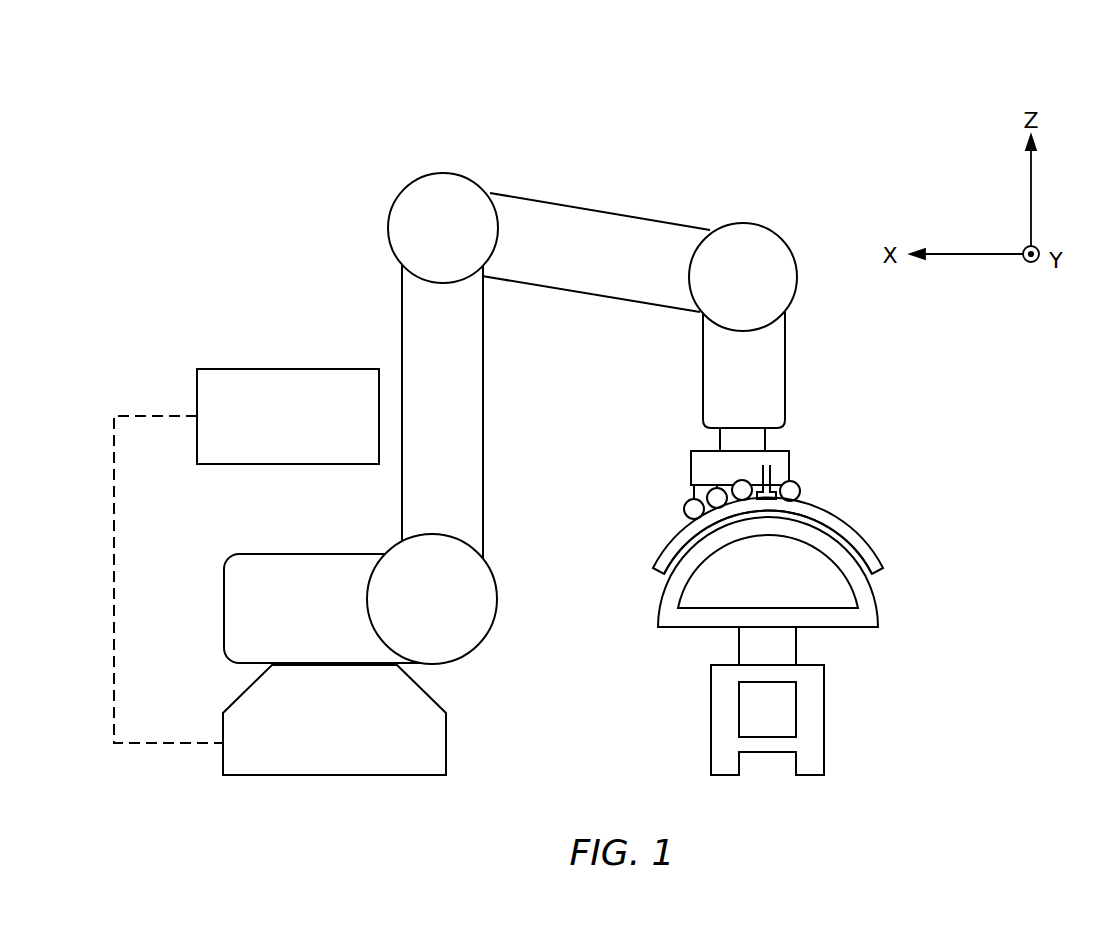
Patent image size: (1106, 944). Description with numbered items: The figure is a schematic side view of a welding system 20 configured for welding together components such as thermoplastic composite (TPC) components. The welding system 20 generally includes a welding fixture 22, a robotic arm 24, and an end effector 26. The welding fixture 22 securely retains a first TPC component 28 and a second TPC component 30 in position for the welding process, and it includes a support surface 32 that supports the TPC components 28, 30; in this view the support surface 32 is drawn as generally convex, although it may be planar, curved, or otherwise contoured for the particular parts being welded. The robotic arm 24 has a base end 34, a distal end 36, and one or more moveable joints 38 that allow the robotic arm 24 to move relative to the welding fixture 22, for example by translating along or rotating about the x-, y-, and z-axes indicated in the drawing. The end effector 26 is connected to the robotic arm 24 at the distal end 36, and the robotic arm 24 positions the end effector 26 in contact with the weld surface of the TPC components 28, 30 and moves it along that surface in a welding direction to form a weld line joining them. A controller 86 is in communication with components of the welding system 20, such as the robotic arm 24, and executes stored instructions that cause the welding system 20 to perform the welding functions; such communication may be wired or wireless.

The welding system 20 is at (497, 402).
The welding fixture 22 is at (851, 628).
The robotic arm 24 is at (566, 178).
The end effector 26 is at (789, 465).
The first TPC component 28 is at (877, 545).
The second TPC component 30 is at (878, 580).
The support surface 32 is at (838, 545).
The base end 34 is at (423, 748).
The distal end 36 is at (757, 439).
The moveable joints 38 is at (420, 185).
The controller 86 is at (280, 369).